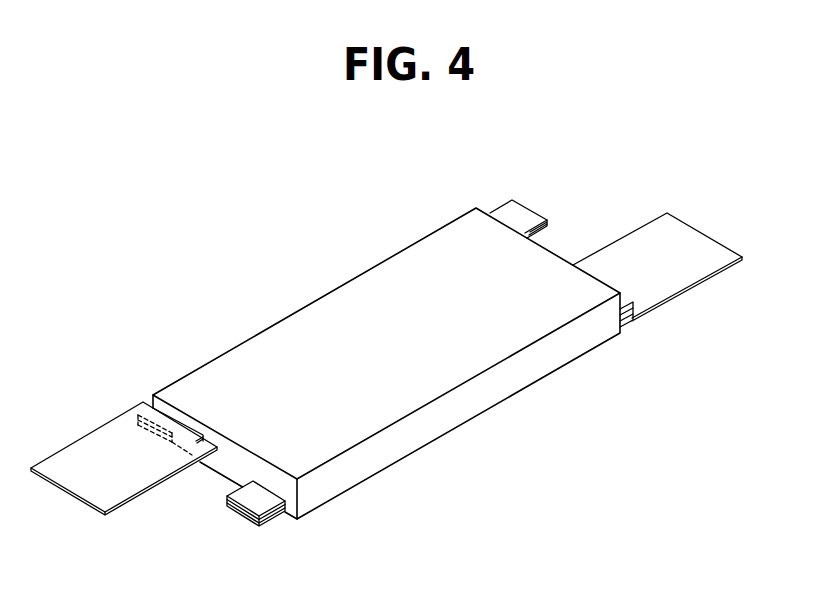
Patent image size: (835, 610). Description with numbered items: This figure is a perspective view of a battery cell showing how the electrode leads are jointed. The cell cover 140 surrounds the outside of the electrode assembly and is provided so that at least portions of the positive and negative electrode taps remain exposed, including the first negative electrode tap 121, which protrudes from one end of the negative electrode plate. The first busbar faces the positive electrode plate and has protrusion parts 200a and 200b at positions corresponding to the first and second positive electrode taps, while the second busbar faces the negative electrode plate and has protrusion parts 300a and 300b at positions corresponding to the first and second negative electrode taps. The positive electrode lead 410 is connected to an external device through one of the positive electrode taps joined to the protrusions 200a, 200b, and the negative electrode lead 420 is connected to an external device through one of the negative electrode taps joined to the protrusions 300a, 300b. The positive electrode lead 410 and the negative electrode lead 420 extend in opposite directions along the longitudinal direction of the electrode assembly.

The first negative electrode tap 121 is at (248, 501).
The cell cover 140 is at (465, 412).
The protrusion part of the first busbar 200a is at (163, 410).
The protrusion part of the first busbar 200b is at (510, 212).
The protrusion part of the second busbar 300a is at (275, 518).
The protrusion part of the second busbar 300b is at (632, 323).
The positive electrode lead 410 is at (98, 440).
The negative electrode lead 420 is at (667, 288).